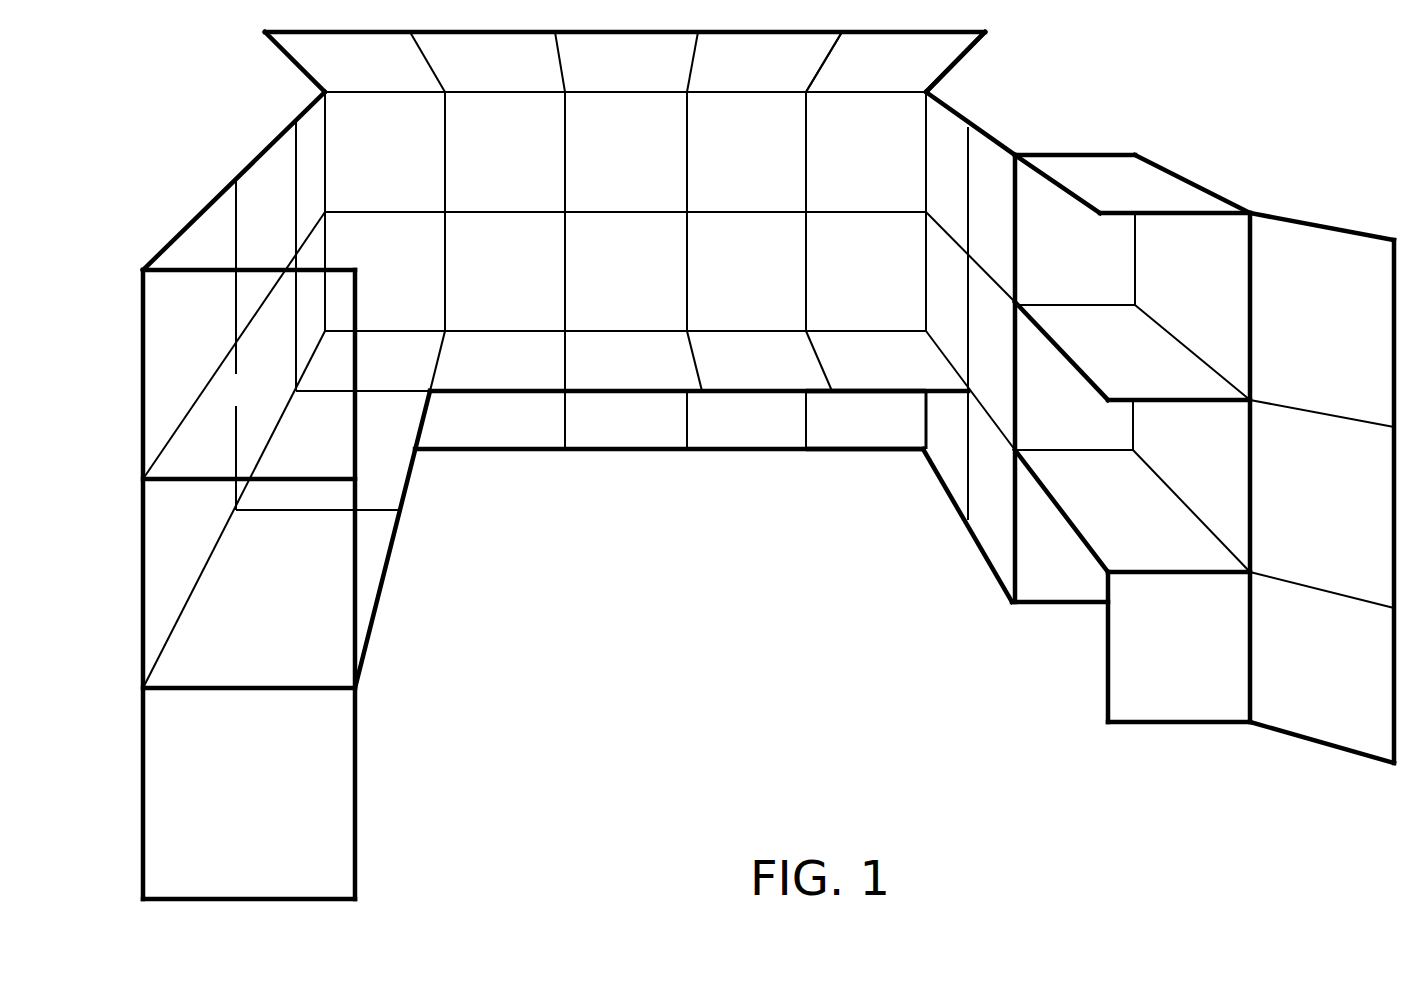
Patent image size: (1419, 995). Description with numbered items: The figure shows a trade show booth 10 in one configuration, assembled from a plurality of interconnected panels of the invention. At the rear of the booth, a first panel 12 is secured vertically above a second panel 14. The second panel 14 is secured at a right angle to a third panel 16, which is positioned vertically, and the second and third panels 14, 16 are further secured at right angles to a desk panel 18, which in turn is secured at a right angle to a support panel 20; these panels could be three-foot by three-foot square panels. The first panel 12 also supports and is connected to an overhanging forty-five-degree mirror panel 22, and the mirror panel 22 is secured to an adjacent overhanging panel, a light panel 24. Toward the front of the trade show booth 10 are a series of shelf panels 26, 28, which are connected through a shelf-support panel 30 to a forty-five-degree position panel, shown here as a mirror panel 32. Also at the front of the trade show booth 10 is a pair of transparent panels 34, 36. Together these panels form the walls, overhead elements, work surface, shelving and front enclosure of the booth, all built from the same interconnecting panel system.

The trade show booth 10 is at (828, 672).
The first panel 12 is at (850, 186).
The second panel 14 is at (850, 279).
The third panel 16 is at (930, 305).
The desk panel 18 is at (858, 376).
The support panel 20 is at (857, 435).
The mirror panel 22 is at (870, 77).
The light panel 24 is at (739, 77).
The shelf panel 26 is at (1087, 346).
The shelf panel 28 is at (1077, 513).
The shelf-support panel 30 is at (1187, 466).
The mirror panel 32 is at (1327, 335).
The transparent panel 34 is at (218, 403).
The transparent panel 36 is at (238, 582).